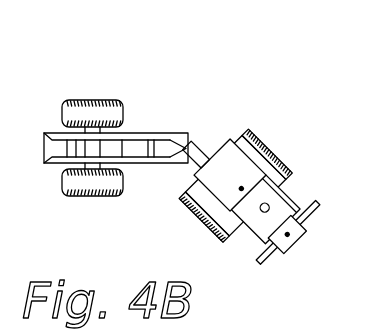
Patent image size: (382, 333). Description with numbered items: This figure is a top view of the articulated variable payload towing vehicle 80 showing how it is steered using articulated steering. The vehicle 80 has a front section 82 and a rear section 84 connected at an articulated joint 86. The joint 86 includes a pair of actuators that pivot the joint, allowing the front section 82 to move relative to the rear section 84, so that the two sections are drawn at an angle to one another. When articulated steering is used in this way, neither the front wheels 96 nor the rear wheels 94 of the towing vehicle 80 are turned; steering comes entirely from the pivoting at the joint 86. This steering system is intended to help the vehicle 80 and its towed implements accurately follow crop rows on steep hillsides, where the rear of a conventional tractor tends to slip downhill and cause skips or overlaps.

The towing vehicle 80 is at (189, 78).
The front section 82 is at (284, 125).
The rear section 84 is at (141, 104).
The articulated joint 86 is at (203, 148).
The rear wheels 94 is at (81, 100).
The front wheels 96 is at (284, 164).